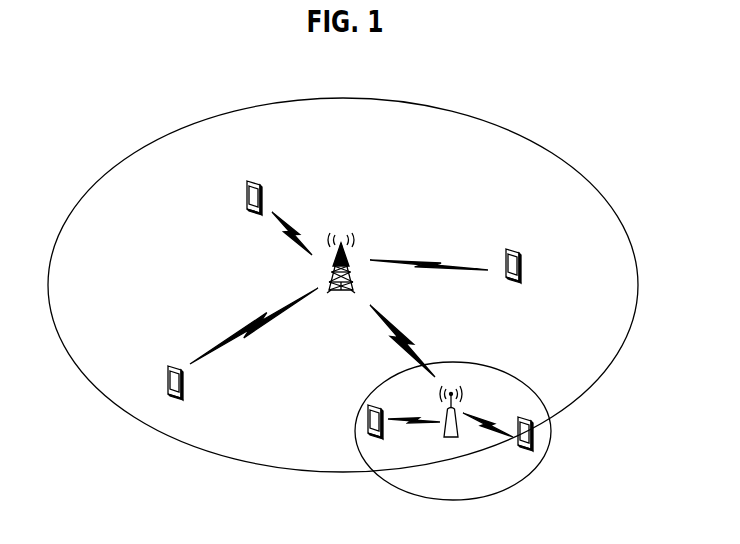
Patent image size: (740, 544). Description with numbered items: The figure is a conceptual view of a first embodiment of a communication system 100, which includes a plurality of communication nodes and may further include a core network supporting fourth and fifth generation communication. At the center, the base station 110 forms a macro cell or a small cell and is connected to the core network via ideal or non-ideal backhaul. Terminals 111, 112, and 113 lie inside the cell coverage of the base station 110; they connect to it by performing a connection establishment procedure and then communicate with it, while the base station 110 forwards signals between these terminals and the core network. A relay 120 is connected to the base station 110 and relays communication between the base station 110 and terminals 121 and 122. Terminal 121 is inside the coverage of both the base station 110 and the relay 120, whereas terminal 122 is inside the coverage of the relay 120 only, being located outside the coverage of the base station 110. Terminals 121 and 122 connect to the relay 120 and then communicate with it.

The communication system 100 is at (355, 76).
The base station 110 is at (341, 237).
The terminal #11 111 is at (173, 365).
The terminal #12 112 is at (252, 180).
The terminal #13 113 is at (511, 248).
The relay 120 is at (453, 439).
The terminal #21 121 is at (371, 404).
The terminal #22 122 is at (519, 451).